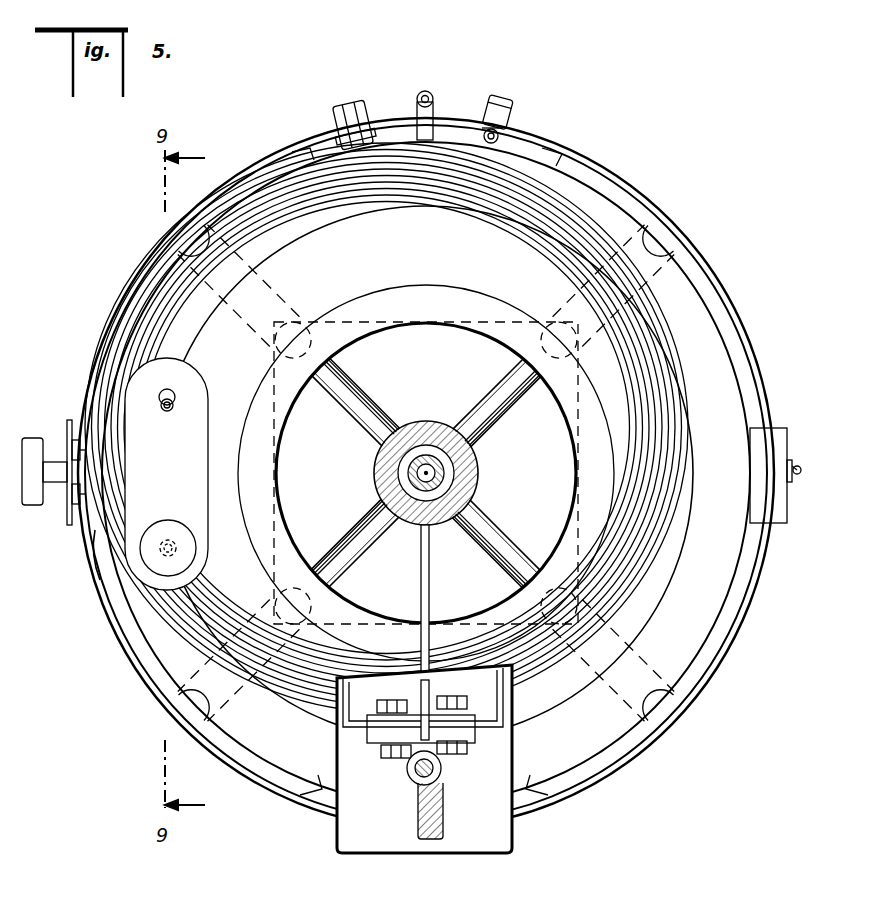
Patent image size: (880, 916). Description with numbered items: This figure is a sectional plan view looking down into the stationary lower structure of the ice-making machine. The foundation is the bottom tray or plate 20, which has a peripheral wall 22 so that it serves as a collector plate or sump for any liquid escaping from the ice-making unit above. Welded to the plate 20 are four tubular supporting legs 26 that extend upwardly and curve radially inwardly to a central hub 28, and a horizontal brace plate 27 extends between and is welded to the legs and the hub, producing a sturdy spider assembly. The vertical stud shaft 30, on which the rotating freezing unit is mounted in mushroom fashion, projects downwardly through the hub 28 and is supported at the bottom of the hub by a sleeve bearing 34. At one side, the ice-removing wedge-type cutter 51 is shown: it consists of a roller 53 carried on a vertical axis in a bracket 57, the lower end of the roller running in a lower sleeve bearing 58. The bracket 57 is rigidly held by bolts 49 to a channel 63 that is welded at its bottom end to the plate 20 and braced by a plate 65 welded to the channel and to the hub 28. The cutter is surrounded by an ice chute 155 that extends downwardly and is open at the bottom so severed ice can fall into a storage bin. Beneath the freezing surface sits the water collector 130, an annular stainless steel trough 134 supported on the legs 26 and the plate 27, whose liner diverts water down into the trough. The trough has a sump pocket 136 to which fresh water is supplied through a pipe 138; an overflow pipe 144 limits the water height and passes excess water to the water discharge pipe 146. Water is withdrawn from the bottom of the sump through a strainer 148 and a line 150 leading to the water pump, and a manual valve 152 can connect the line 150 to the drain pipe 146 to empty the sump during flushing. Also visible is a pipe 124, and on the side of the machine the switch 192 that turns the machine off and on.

The bottom tray or plate 20 is at (718, 652).
The peripheral wall 22 is at (650, 752).
The tubular supporting legs 26 is at (185, 232).
The horizontal brace plate 27 is at (482, 318).
The central hub 28 is at (420, 430).
The vertical stud shaft 30 is at (406, 474).
The sleeve bearing 34 is at (446, 466).
The bolts 49 is at (393, 700).
The ice-removing wedge-type cutter 51 is at (404, 786).
The roller 53 is at (436, 769).
The bracket 57 is at (443, 806).
The lower sleeve bearing 58 is at (407, 772).
The channel 63 is at (488, 720).
The brace plate 65 is at (421, 574).
The pipe fitting 124 is at (420, 93).
The water collector 130 is at (130, 318).
The annular trough 134 is at (580, 215).
The sump pocket 136 is at (190, 438).
The pipe 138 is at (486, 130).
The overflow pipe 144 is at (160, 410).
The water discharge pipe 146 is at (338, 114).
The strainer 148 is at (152, 540).
The line 150 is at (172, 555).
The manual valve 152 is at (70, 470).
The ice chute 155 is at (412, 858).
The switch 192 is at (796, 490).